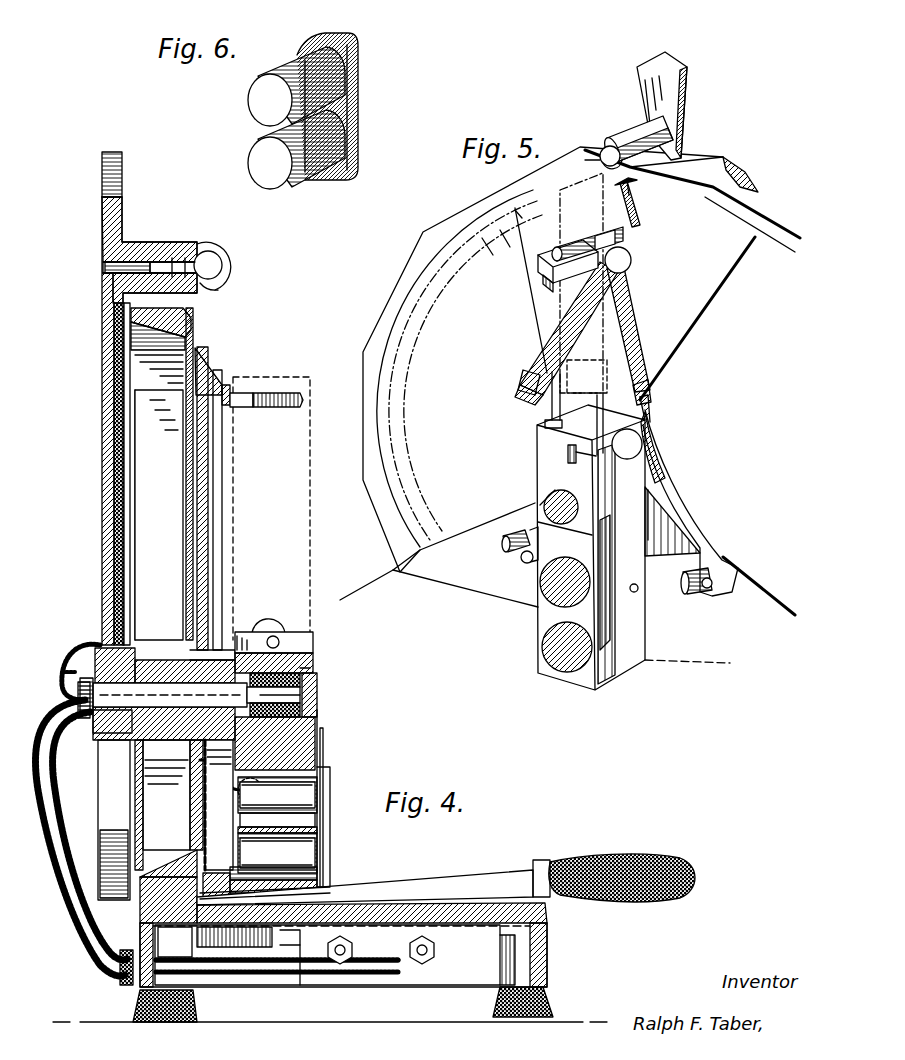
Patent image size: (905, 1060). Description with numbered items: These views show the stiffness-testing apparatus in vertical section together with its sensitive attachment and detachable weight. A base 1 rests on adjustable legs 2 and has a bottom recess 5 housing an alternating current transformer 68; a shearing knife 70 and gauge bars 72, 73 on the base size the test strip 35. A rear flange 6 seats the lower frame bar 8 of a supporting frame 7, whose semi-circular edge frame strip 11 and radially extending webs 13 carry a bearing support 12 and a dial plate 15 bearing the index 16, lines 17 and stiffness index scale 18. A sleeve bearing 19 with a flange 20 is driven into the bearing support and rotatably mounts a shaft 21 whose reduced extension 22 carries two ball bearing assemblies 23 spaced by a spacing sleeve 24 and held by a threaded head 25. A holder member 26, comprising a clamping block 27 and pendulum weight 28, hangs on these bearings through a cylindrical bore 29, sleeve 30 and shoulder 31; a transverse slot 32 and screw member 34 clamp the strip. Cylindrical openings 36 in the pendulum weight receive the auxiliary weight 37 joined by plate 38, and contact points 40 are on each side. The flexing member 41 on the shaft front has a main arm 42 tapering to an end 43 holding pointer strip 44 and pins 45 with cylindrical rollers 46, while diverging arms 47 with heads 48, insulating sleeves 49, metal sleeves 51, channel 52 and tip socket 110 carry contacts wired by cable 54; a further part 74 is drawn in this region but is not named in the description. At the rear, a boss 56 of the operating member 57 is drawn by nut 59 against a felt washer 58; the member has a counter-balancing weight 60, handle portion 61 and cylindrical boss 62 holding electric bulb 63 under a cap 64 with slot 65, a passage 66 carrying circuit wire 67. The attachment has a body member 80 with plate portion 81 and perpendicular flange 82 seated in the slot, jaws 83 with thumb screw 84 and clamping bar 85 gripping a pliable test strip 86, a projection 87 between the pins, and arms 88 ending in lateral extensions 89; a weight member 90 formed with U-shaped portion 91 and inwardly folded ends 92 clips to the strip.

In FIG. 5, the base 1 is at (362, 595).
In FIG. 4, the base 1 is at (343, 985).
In FIG. 4, the legs 2 is at (165, 1025).
In FIG. 4, the recess 5 is at (390, 903).
In FIG. 5, the flange 6 is at (392, 575).
In FIG. 4, the flange 6 is at (150, 880).
In FIG. 5, the supporting frame 7 is at (398, 272).
In FIG. 4, the supporting frame 7 is at (136, 408).
In FIG. 4, the lower frame bar 8 is at (170, 855).
In FIG. 5, the edge frame strip 11 is at (762, 182).
In FIG. 4, the edge frame strip 11 is at (192, 313).
In FIG. 4, the bearing support 12 is at (140, 652).
In FIG. 4, the radially extending webs 13 is at (145, 482).
In FIG. 5, the dial plate 15 is at (780, 210).
In FIG. 4, the dial plate 15 is at (195, 344).
In FIG. 5, the index position 16 is at (690, 163).
In FIG. 5, the lines 17 is at (698, 338).
In FIG. 5, the stiffness index scale 18 is at (418, 295).
In FIG. 4, the sleeve bearing 19 is at (176, 652).
In FIG. 4, the flange 20 is at (210, 658).
In FIG. 4, the shaft 21 is at (98, 740).
In FIG. 4, the reduced extension 22 is at (303, 690).
In FIG. 4, the ball bearing assemblies 23 is at (315, 740).
In FIG. 4, the spacing sleeve 24 is at (310, 705).
In FIG. 5, the threaded head 25 is at (565, 500).
In FIG. 4, the threaded head 25 is at (303, 714).
In FIG. 5, the holder member 26 is at (545, 492).
In FIG. 4, the holder member 26 is at (320, 758).
In FIG. 5, the clamping block 27 is at (575, 547).
In FIG. 4, the clamping block 27 is at (300, 668).
In FIG. 5, the pendulum weight 28 is at (625, 660).
In FIG. 4, the pendulum weight 28 is at (305, 975).
In FIG. 4, the cylindrical bore 29 is at (303, 676).
In FIG. 4, the sleeve 30 is at (313, 660).
In FIG. 4, the shoulder 31 is at (163, 695).
In FIG. 5, the transverse slot 32 is at (580, 458).
In FIG. 4, the transverse slot 32 is at (313, 645).
In FIG. 5, the screw member 34 is at (643, 444).
In FIG. 4, the screw member 34 is at (275, 632).
In FIG. 4, the test strip 35 is at (268, 380).
In FIG. 5, the cylindrical openings 36 is at (545, 643).
In FIG. 4, the cylindrical openings 36 is at (292, 828).
In FIG. 6, the auxiliary weight 37 is at (262, 160).
In FIG. 4, the auxiliary weight 37 is at (305, 787).
In FIG. 6, the plate 38 is at (358, 118).
In FIG. 4, the plate 38 is at (325, 822).
In FIG. 5, the contact point 40 is at (640, 592).
In FIG. 5, the flexing member 41 is at (680, 462).
In FIG. 4, the flexing member 41 is at (226, 535).
In FIG. 5, the main arm 42 is at (652, 410).
In FIG. 4, the main arm 42 is at (222, 480).
In FIG. 5, the pointed end 43 is at (632, 205).
In FIG. 4, the pointed end 43 is at (228, 384).
In FIG. 5, the pointer strip 44 is at (630, 183).
In FIG. 4, the pointer strip 44 is at (205, 380).
In FIG. 5, the pins 45 is at (605, 232).
In FIG. 4, the pins 45 is at (244, 409).
In FIG. 5, the cylindrical rollers 46 is at (570, 247).
In FIG. 4, the cylindrical rollers 46 is at (285, 409).
In FIG. 5, the arms 47 is at (673, 495).
In FIG. 5, the heads 48 is at (505, 541).
In FIG. 4, the heads 48 is at (217, 800).
In FIG. 5, the insulating sleeve 49 is at (535, 546).
In FIG. 5, the metal sleeve 51 is at (526, 562).
In FIG. 4, the metal sleeve 51 is at (262, 788).
In FIG. 4, the channel 52 is at (180, 770).
In FIG. 4, the electric circuit cable 54 is at (205, 790).
In FIG. 4, the boss 56 is at (95, 650).
In FIG. 5, the operating member 57 is at (685, 134).
In FIG. 4, the operating member 57 is at (105, 462).
In FIG. 4, the felt washer 58 is at (62, 672).
In FIG. 4, the nut 59 is at (72, 695).
In FIG. 4, the counter-balancing weight 60 is at (115, 792).
In FIG. 5, the handle portion 61 is at (680, 84).
In FIG. 4, the handle portion 61 is at (122, 190).
In FIG. 5, the cylindrical boss 62 is at (646, 128).
In FIG. 4, the cylindrical boss 62 is at (165, 242).
In FIG. 4, the electric bulb 63 is at (207, 251).
In FIG. 5, the cap 64 is at (612, 144).
In FIG. 4, the cap 64 is at (226, 257).
In FIG. 4, the slot 65 is at (222, 289).
In FIG. 4, the passage 66 is at (104, 267).
In FIG. 4, the circuit wire 67 is at (105, 520).
In FIG. 4, the alternating current transformer 68 is at (385, 965).
In FIG. 4, the shearing knife 70 is at (420, 878).
In FIG. 4, the gauge bar 72 is at (275, 937).
In FIG. 4, the gauge bar 73 is at (480, 882).
In FIG. 4, the block 74 is at (228, 858).
In FIG. 5, the body member 80 is at (610, 318).
In FIG. 5, the plate portion 81 is at (648, 420).
In FIG. 5, the perpendicular flange 82 is at (566, 452).
In FIG. 5, the jaws 83 is at (555, 282).
In FIG. 5, the thumb screw 84 is at (622, 262).
In FIG. 5, the clamping bar 85 is at (538, 262).
In FIG. 5, the test strip 86 is at (545, 345).
In FIG. 5, the projection 87 is at (636, 228).
In FIG. 5, the arms 88 is at (560, 320).
In FIG. 5, the lateral extensions 89 is at (535, 390).
In FIG. 5, the weight member 90 is at (610, 375).
In FIG. 5, the U-shaped portion 91 is at (550, 410).
In FIG. 5, the inwardly extended ends 92 is at (545, 424).
In FIG. 5, the tip socket 110 is at (708, 590).